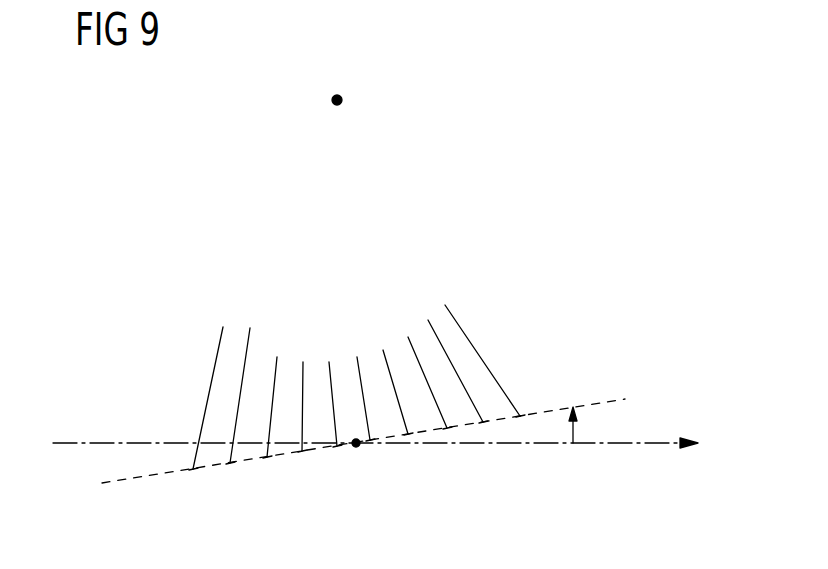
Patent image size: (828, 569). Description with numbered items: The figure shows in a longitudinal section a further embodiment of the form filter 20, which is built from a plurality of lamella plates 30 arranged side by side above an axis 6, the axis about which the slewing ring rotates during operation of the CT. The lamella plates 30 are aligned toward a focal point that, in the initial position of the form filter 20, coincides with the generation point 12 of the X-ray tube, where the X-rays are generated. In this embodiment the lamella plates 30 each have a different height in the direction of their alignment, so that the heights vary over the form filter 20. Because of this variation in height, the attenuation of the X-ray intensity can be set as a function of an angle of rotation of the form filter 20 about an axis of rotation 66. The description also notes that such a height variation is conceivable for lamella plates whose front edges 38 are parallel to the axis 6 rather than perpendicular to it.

The generation point 12 is at (337, 97).
The axis 6 is at (652, 444).
The axis of rotation 66 is at (356, 445).
The form filter 20 is at (388, 356).
The front edges 38 is at (250, 328).
The lamella plates 30 is at (455, 318).